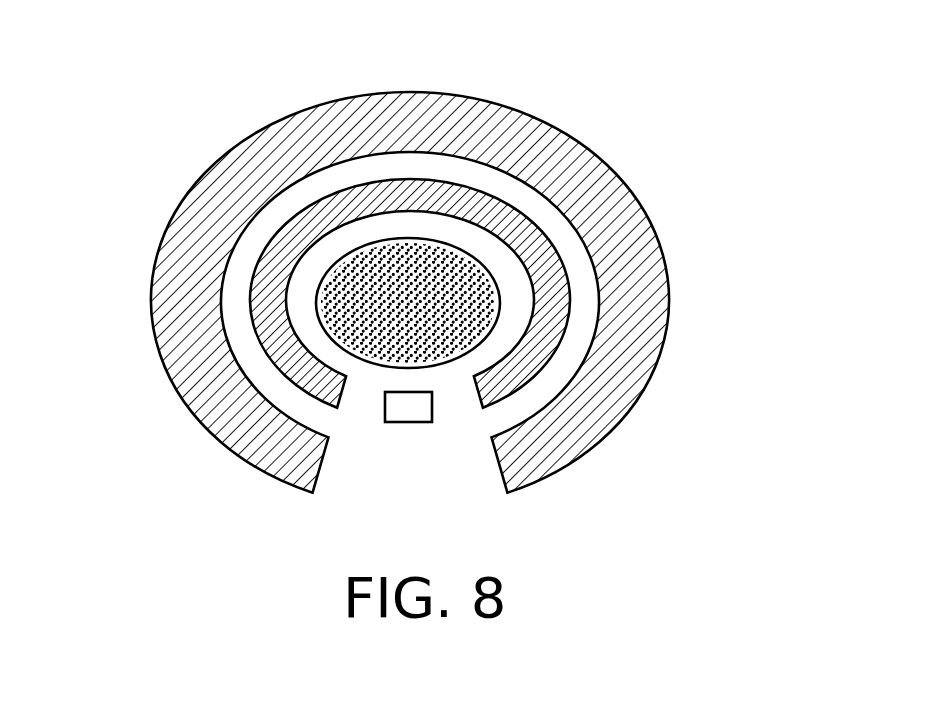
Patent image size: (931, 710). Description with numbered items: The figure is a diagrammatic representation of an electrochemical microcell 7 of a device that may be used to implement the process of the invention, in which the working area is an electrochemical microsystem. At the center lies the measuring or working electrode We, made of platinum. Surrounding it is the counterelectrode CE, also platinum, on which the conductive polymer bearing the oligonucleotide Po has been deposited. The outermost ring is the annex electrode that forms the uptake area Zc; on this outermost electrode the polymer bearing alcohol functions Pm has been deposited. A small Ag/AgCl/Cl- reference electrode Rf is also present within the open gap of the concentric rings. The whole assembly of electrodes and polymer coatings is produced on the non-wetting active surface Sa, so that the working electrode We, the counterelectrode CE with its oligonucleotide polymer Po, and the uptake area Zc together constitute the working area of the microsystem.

The sensor unit 7 is at (253, 117).
The conductive polymer bearing the oligonucleotide Po is at (397, 197).
The counterelectrode CE is at (442, 185).
The uptake area Zc is at (613, 175).
The polymer bearing alcohol functions Pm is at (650, 302).
The non-wetting active surface Sa is at (125, 370).
The reference electrode Rf is at (412, 413).
The working electrode We is at (428, 352).